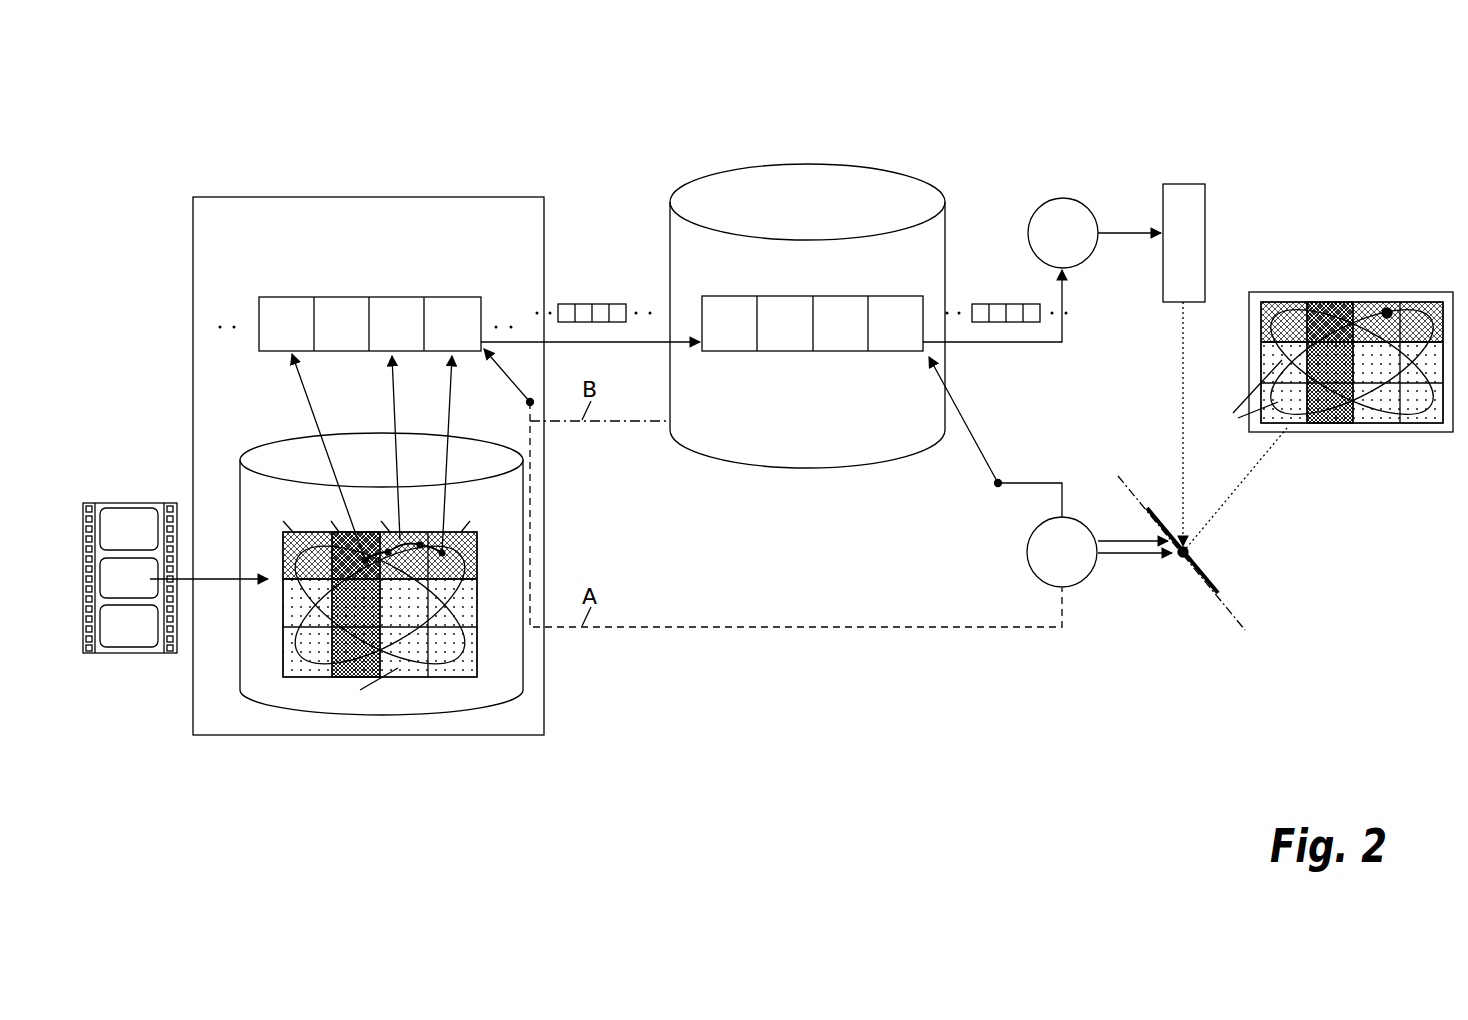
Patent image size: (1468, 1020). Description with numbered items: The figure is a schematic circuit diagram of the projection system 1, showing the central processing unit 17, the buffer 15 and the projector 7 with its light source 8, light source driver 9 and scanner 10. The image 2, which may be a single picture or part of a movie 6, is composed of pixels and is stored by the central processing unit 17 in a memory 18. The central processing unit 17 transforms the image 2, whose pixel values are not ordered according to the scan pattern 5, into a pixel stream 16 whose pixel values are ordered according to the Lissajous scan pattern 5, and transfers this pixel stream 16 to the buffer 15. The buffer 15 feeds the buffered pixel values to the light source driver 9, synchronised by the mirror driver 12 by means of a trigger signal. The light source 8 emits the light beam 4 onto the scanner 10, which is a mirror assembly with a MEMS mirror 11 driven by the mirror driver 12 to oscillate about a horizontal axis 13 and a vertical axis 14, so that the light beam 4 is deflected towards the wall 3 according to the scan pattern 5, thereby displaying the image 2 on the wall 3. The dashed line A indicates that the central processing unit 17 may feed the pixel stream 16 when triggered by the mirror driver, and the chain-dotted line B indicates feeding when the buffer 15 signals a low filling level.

The projection system 1 is at (152, 89).
The image 2 is at (468, 605).
The wall 3 is at (1360, 292).
The light beam 4 is at (1181, 432).
The scan pattern 5 is at (475, 659).
The movie 6 is at (113, 503).
The projector 7 is at (1055, 163).
The light source 8 is at (1205, 270).
The light source driver 9 is at (1030, 222).
The scanner 10 is at (1184, 591).
The MEMS mirror 11 is at (1207, 580).
The mirror driver 12 is at (1030, 535).
The horizontal axis 13 is at (1228, 612).
The vertical axis 14 is at (1180, 559).
The buffer 15 is at (685, 202).
The pixel stream 16 is at (265, 297).
The central processing unit 17 is at (496, 197).
The memory 18 is at (270, 455).